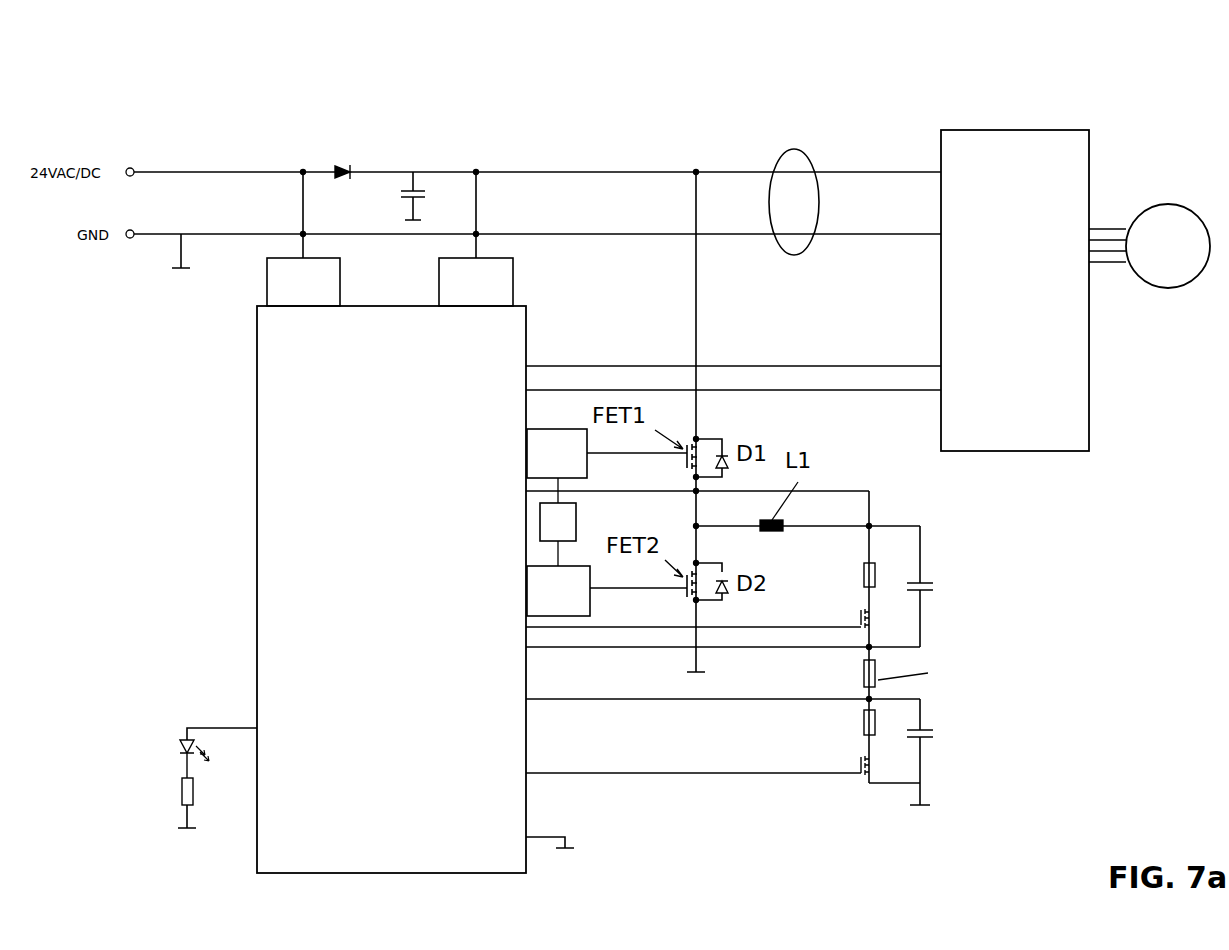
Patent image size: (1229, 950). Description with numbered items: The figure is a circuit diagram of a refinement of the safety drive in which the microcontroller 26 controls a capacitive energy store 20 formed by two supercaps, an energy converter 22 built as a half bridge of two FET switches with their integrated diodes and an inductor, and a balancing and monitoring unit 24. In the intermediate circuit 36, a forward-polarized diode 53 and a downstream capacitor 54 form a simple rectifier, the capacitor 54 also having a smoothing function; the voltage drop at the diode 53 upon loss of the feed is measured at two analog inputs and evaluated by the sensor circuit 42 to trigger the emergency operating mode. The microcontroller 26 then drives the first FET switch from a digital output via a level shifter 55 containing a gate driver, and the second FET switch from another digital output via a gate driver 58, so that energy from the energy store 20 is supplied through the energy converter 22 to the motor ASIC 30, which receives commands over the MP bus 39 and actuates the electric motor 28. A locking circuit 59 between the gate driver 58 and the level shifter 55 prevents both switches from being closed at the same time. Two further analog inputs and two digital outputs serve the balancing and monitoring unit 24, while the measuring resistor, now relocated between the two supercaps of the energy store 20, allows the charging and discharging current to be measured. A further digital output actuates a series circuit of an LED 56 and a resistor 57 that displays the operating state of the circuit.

The capacitive energy store 20 is at (950, 822).
The energy converter 22 is at (753, 785).
The balancing and monitoring unit 24 is at (904, 483).
The microcontroller 26 is at (257, 394).
The electric motor 28 is at (1161, 213).
The motor ASIC 30 is at (1004, 147).
The intermediate circuit 36 is at (792, 157).
The MP bus 39 is at (794, 391).
The sensor circuit 42 is at (500, 147).
The diode 53 is at (340, 172).
The capacitor 54 is at (427, 195).
The level shifter 55 is at (557, 453).
The LED 56 is at (183, 750).
The resistor 57 is at (182, 795).
The gate driver 58 is at (558, 591).
The locking circuit 59 is at (558, 522).